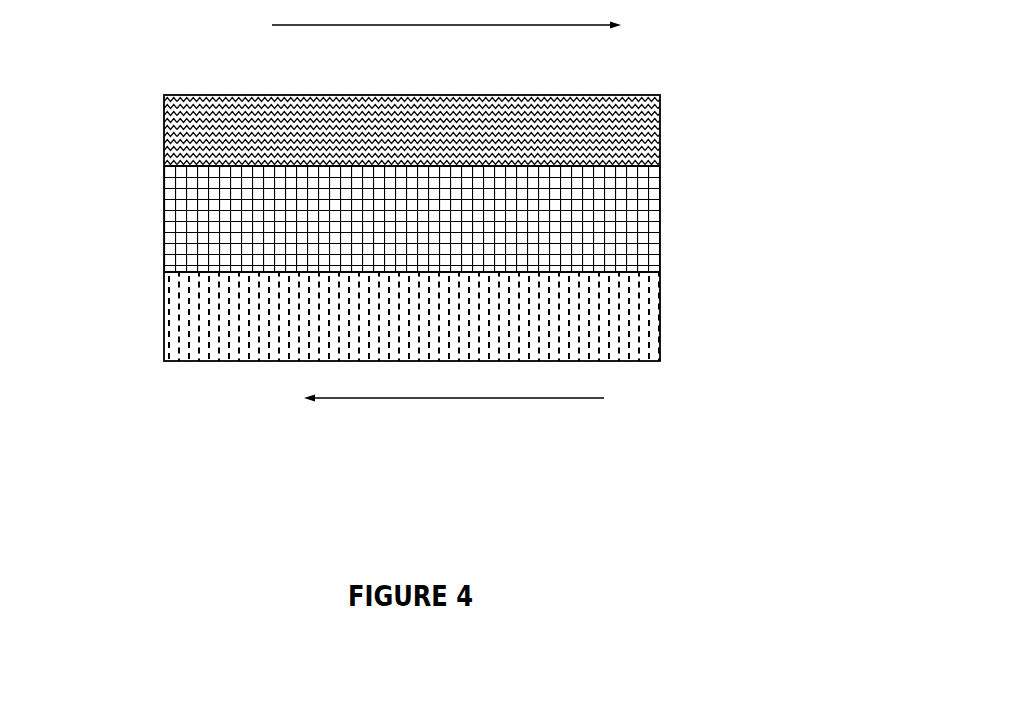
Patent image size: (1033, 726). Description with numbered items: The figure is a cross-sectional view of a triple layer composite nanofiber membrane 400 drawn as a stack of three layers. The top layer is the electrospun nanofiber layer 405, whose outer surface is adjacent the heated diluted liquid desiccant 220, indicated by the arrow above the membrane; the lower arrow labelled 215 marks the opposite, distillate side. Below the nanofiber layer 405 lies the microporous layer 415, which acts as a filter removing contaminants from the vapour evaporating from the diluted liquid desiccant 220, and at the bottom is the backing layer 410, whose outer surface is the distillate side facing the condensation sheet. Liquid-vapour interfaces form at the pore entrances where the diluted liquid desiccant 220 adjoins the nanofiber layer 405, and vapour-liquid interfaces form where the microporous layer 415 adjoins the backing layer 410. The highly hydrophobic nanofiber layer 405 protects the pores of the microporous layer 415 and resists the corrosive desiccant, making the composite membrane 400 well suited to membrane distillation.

The triple layer composite nanofiber membrane 400 is at (94, 78).
The electrospun nanofiber layer 405 is at (660, 131).
The microporous layer 415 is at (660, 236).
The backing layer 410 is at (235, 362).
The diluted liquid desiccant 220 is at (468, 31).
The second direction 215 is at (476, 400).